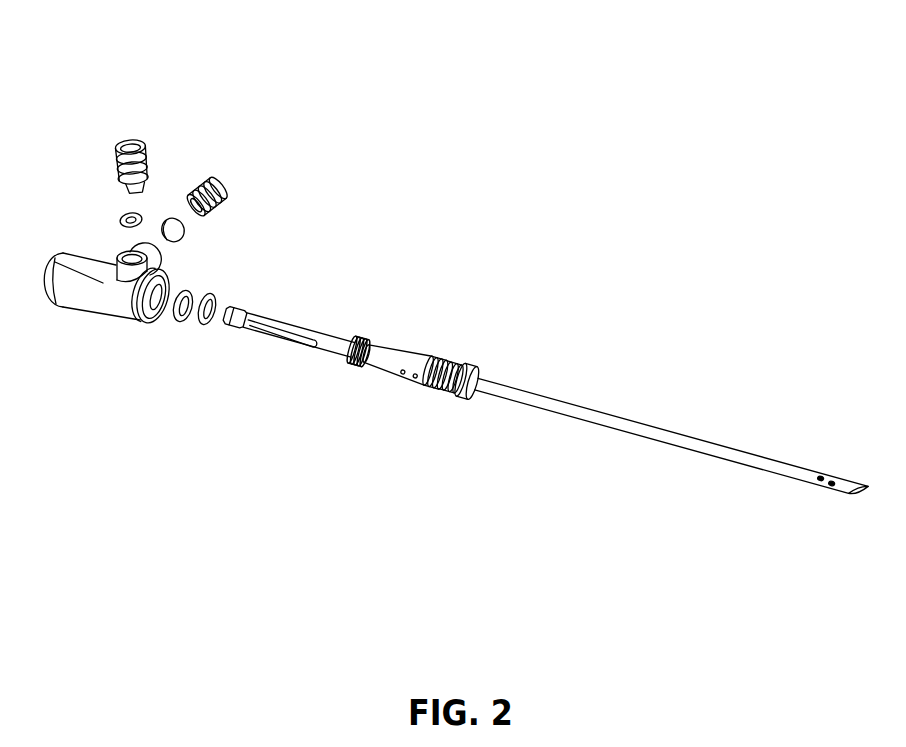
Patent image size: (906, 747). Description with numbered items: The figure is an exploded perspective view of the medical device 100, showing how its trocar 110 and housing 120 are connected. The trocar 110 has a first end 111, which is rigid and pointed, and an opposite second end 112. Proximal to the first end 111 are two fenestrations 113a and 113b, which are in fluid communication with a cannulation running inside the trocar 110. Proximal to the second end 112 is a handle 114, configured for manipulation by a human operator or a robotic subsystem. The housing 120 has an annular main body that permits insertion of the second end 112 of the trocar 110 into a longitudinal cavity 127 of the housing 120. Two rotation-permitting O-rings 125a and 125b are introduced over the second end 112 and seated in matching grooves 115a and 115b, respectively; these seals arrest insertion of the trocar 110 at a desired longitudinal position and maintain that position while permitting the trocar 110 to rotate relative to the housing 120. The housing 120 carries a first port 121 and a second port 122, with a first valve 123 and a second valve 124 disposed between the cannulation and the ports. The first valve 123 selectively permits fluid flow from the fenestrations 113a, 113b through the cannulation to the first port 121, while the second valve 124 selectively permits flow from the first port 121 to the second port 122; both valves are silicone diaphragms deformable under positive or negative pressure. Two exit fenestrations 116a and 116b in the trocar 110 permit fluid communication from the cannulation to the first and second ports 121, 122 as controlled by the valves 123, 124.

The medical device 100 is at (138, 41).
The trocar 110 is at (602, 427).
The first end 111 is at (868, 494).
The second end 112 is at (250, 333).
The fenestration 113a is at (827, 480).
The fenestration 113b is at (832, 490).
The handle 114 is at (307, 305).
The groove 115a is at (417, 382).
The groove 115b is at (443, 392).
The exit fenestration 116a is at (403, 367).
The exit fenestration 116b is at (430, 367).
The housing 120 is at (63, 252).
The first port 121 is at (117, 152).
The second port 122 is at (230, 173).
The first valve 123 is at (145, 217).
The second valve 124 is at (186, 233).
The rotation-permitting O-ring 125a is at (142, 316).
The rotation-permitting O-ring 125b is at (207, 326).
The longitudinal cavity 127 is at (168, 292).